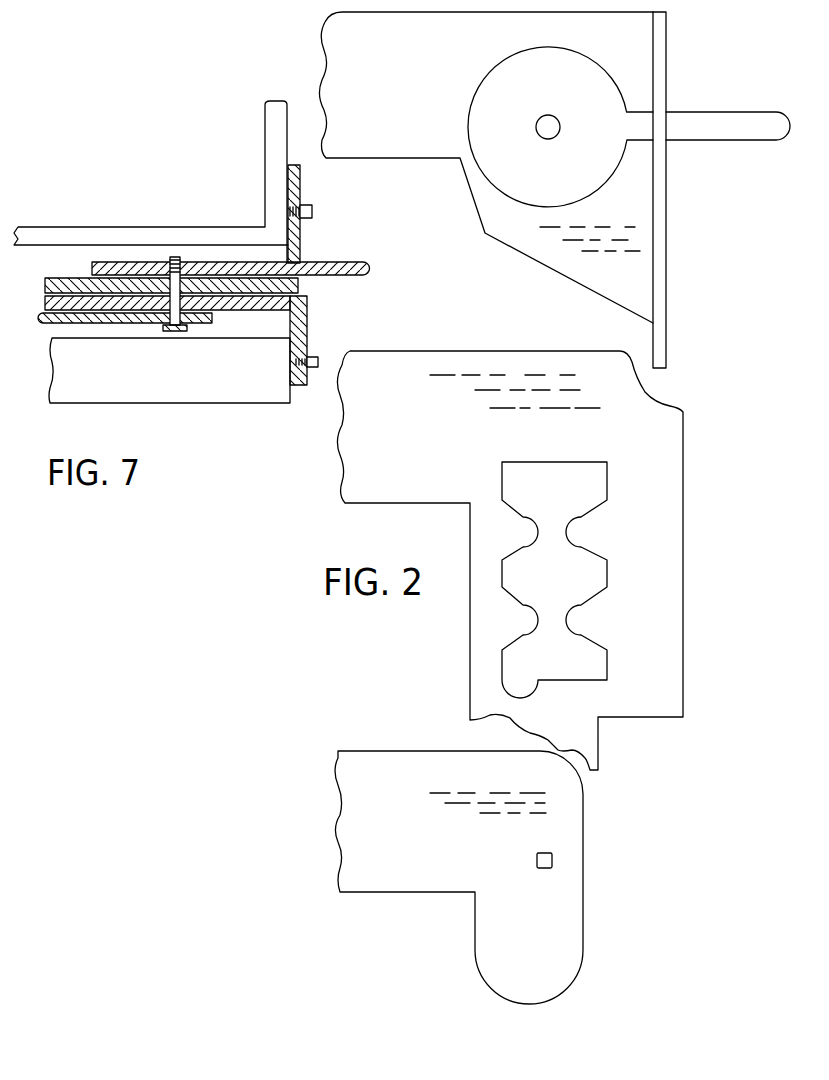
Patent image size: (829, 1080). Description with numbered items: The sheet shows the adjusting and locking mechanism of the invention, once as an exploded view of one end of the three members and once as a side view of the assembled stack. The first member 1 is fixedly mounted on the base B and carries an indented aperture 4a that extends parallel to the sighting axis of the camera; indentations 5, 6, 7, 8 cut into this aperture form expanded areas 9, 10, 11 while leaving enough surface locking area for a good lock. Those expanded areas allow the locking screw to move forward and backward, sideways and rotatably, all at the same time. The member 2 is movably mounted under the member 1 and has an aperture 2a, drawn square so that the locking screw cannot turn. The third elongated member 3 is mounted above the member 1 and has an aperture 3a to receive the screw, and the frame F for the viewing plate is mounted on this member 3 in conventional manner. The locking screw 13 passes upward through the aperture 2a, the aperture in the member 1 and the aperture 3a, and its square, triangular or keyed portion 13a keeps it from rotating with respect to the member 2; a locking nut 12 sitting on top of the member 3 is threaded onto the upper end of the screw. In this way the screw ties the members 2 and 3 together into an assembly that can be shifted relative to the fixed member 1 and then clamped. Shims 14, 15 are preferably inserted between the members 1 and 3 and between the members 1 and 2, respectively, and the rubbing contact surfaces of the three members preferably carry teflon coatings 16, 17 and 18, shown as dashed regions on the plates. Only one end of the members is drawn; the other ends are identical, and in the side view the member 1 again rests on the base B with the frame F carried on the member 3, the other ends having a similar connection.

In FIG. 7, the first member 1 is at (305, 336).
In FIG. 2, the first member 1 is at (470, 596).
In FIG. 7, the member 2 is at (200, 322).
In FIG. 2, the member 2 is at (334, 805).
In FIG. 2, the aperture 2a is at (537, 853).
In FIG. 7, the third elongated member 3 is at (300, 248).
In FIG. 2, the third elongated member 3 is at (390, 158).
In FIG. 2, the aperture 3a is at (543, 116).
In FIG. 2, the aperture 4a is at (607, 580).
In FIG. 2, the indentation 5 is at (536, 530).
In FIG. 2, the indentation 6 is at (567, 530).
In FIG. 2, the indentation 7 is at (536, 620).
In FIG. 2, the indentation 8 is at (567, 620).
In FIG. 2, the expanded area 9 is at (556, 671).
In FIG. 2, the expanded area 10 is at (548, 580).
In FIG. 2, the expanded area 11 is at (555, 498).
In FIG. 2, the locking nut 12 is at (500, 64).
In FIG. 7, the locking screw 13 is at (178, 258).
In FIG. 7, the keyed portion 13a is at (165, 331).
In FIG. 7, the shim 14 is at (150, 268).
In FIG. 7, the shim 15 is at (122, 321).
In FIG. 2, the teflon coating 16 is at (477, 394).
In FIG. 2, the teflon coating 17 is at (452, 805).
In FIG. 2, the teflon coating 18 is at (594, 227).
In FIG. 7, the frame F is at (265, 141).
In FIG. 7, the base B is at (160, 404).